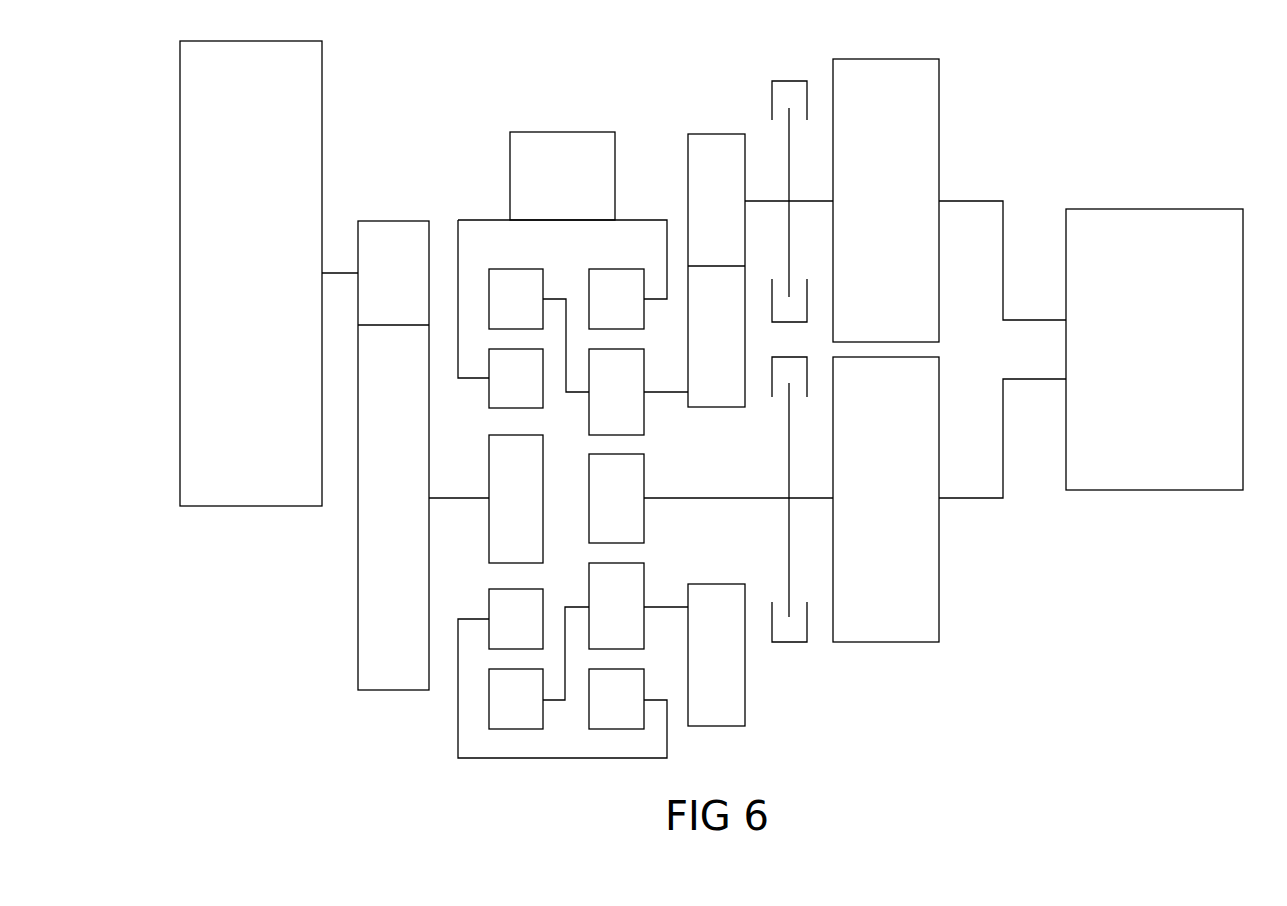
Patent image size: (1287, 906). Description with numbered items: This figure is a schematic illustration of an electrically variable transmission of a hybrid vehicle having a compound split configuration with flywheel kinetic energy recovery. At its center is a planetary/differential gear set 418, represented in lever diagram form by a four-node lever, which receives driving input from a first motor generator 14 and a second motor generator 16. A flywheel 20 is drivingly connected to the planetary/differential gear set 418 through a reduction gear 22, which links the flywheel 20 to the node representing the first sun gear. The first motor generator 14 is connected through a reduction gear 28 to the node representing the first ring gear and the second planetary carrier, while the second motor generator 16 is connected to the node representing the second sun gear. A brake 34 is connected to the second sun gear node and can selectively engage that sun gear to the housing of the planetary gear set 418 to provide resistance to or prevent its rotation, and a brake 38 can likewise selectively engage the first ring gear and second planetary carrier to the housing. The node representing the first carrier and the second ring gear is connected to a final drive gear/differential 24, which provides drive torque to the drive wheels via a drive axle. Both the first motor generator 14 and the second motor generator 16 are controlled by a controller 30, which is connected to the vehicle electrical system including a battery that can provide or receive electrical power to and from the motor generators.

The flywheel 20 is at (240, 284).
The reduction gear 22 is at (381, 284).
The final drive gear/differential 24 is at (550, 188).
The reduction gear 28 is at (704, 209).
The first motor generator 14 is at (874, 212).
The second motor generator 16 is at (874, 508).
The controller 30 is at (1142, 361).
The brake 38 is at (787, 78).
The brake 34 is at (790, 645).
The planetary/differential gear set 418 is at (513, 770).